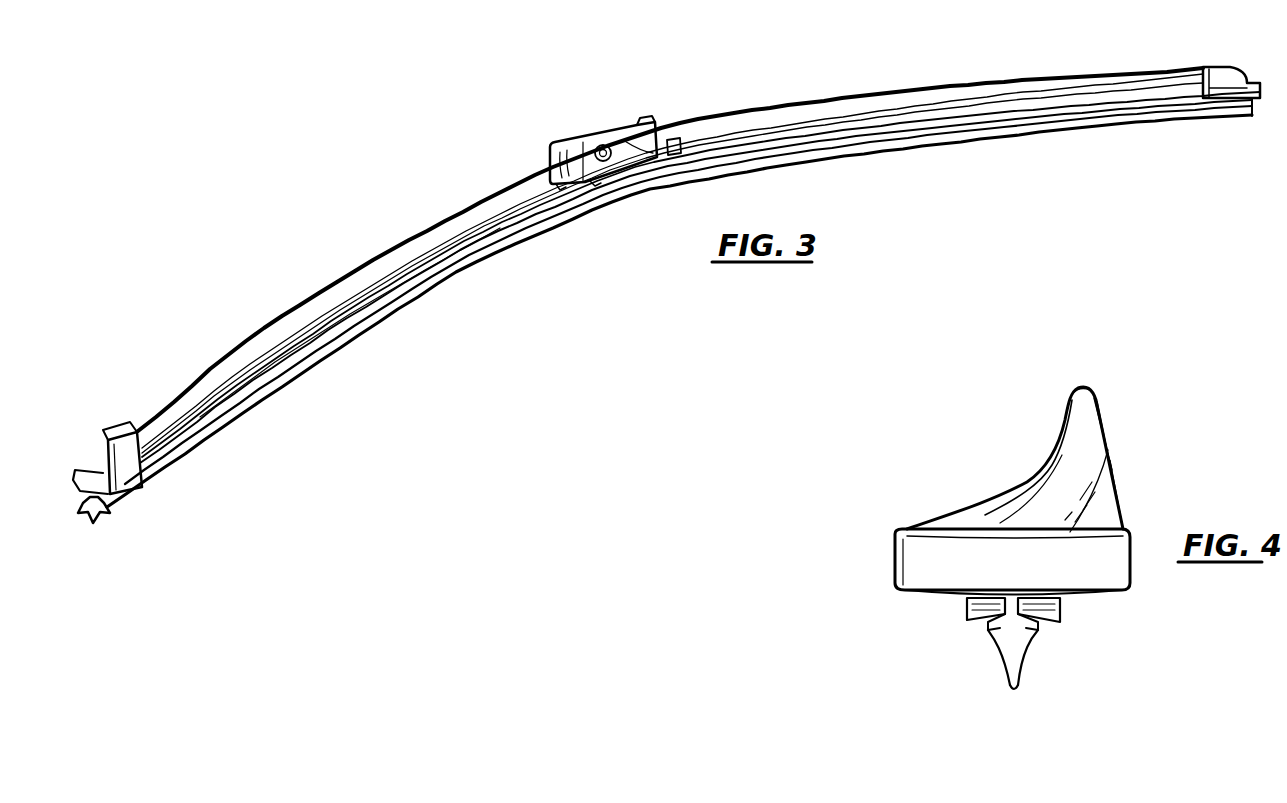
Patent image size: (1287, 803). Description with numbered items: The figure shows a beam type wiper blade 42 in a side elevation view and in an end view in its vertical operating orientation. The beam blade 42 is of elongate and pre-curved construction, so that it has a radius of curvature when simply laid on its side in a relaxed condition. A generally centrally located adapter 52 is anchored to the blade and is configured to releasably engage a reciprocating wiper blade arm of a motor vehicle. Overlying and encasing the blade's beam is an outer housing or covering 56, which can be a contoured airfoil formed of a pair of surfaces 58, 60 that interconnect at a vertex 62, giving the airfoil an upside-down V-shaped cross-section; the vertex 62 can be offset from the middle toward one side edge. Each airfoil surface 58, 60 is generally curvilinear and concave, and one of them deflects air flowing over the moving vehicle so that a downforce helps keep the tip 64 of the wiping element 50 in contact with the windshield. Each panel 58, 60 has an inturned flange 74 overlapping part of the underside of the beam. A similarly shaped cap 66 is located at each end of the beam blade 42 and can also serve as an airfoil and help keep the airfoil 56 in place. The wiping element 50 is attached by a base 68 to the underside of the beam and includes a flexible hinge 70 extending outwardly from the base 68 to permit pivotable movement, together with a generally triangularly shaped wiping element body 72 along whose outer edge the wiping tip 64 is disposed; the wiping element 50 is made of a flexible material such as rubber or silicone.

In FIG. 3, the beam type wiper blade 42 is at (675, 108).
In FIG. 4, the beam type wiper blade 42 is at (1160, 455).
In FIG. 3, the wiping element 50 is at (125, 513).
In FIG. 4, the wiping element 50 is at (975, 682).
In FIG. 3, the adapter 52 is at (597, 132).
In FIG. 3, the outer housing or covering 56 is at (375, 258).
In FIG. 4, the outer housing or covering 56 is at (990, 502).
In FIG. 3, the airfoil surface 58 is at (293, 310).
In FIG. 4, the airfoil surface 58 is at (1050, 467).
In FIG. 4, the airfoil surface 60 is at (1112, 416).
In FIG. 3, the vertex 62 is at (984, 83).
In FIG. 4, the vertex 62 is at (1138, 340).
In FIG. 3, the tip 64 is at (197, 446).
In FIG. 4, the tip 64 is at (1018, 690).
In FIG. 3, the cap 66 is at (123, 424).
In FIG. 4, the cap 66 is at (1122, 507).
In FIG. 4, the base 68 is at (1030, 620).
In FIG. 3, the flexible hinge 70 is at (82, 522).
In FIG. 4, the flexible hinge 70 is at (1043, 628).
In FIG. 3, the wiping element body 72 is at (280, 388).
In FIG. 4, the wiping element body 72 is at (1027, 665).
In FIG. 3, the inturned flange 74 is at (350, 327).
In FIG. 4, the inturned flange 74 is at (915, 592).